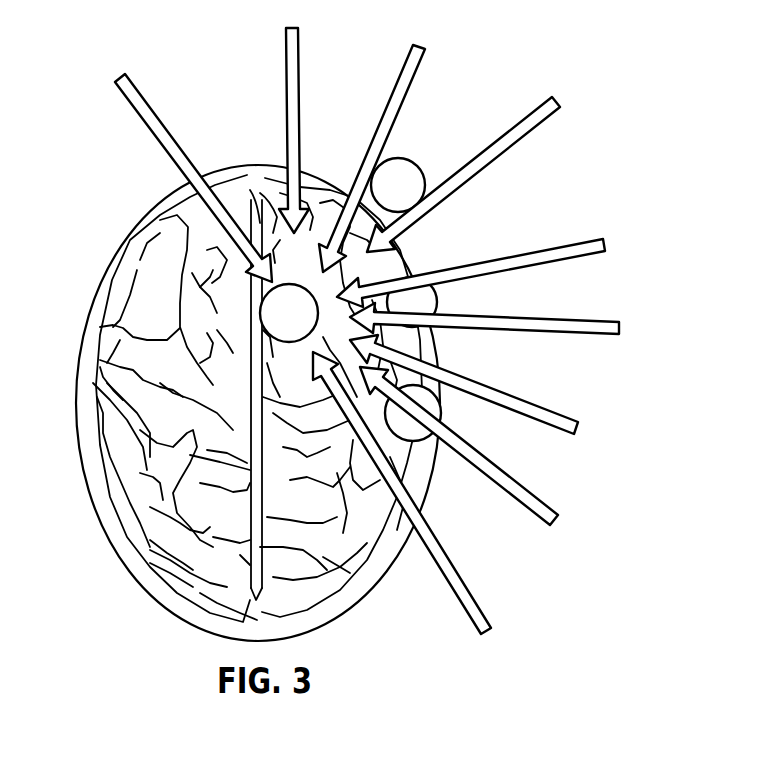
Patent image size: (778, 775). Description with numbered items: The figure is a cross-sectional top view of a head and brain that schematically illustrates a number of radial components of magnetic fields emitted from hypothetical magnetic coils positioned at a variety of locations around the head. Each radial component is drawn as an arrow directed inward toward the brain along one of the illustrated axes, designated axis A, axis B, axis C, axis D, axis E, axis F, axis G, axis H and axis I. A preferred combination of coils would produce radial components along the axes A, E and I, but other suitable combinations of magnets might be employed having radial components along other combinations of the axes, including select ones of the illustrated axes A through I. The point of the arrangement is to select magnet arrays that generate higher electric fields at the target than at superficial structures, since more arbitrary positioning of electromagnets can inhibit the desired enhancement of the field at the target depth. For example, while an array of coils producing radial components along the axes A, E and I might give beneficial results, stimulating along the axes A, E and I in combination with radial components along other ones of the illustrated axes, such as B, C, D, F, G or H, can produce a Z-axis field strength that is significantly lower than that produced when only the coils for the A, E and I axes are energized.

The axis A is at (140, 80).
The axis B is at (297, 50).
The axis C is at (418, 68).
The axis D is at (543, 123).
The axis E is at (577, 242).
The axis F is at (600, 338).
The axis G is at (547, 410).
The axis H is at (538, 520).
The axis I is at (470, 627).